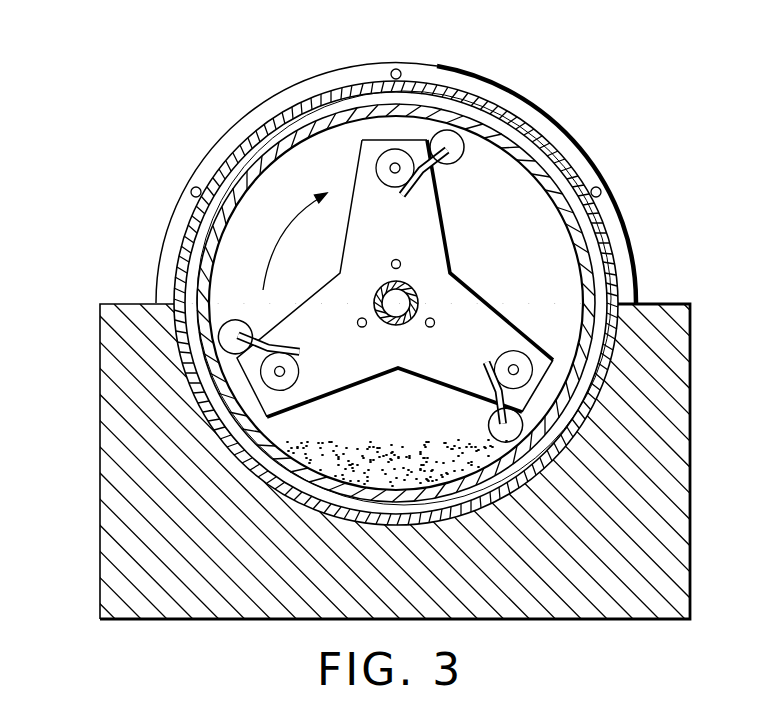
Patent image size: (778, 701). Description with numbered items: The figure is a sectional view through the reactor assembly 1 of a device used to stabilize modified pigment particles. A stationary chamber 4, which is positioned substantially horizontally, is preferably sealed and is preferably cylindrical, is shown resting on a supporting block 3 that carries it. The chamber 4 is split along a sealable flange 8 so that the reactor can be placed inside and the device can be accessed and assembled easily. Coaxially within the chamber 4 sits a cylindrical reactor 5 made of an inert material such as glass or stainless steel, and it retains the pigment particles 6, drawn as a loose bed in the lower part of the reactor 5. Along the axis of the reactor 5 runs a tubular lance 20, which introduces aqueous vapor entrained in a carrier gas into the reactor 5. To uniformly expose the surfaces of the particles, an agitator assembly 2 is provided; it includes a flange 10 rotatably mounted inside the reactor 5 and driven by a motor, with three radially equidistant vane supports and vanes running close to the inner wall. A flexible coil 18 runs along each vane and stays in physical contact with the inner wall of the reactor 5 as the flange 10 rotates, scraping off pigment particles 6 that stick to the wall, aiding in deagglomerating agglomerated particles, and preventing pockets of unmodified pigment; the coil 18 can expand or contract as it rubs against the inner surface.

The reactor assembly 1 is at (135, 97).
The agitator assembly 2 is at (456, 190).
The supporting block 3 is at (690, 415).
The stationary chamber 4 is at (612, 250).
The cylindrical reactor 5 is at (210, 237).
The pigment particles 6 is at (450, 463).
The sealable flange 8 is at (210, 150).
The flange 10 is at (462, 278).
The flexible coil 18 is at (464, 144).
The tubular lance 20 is at (418, 303).